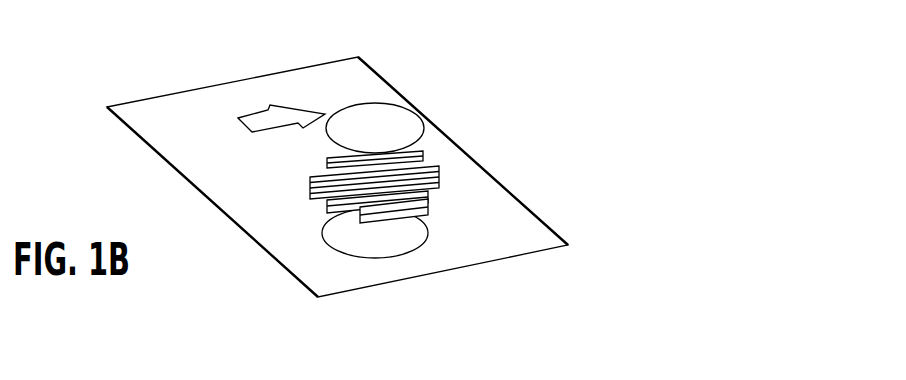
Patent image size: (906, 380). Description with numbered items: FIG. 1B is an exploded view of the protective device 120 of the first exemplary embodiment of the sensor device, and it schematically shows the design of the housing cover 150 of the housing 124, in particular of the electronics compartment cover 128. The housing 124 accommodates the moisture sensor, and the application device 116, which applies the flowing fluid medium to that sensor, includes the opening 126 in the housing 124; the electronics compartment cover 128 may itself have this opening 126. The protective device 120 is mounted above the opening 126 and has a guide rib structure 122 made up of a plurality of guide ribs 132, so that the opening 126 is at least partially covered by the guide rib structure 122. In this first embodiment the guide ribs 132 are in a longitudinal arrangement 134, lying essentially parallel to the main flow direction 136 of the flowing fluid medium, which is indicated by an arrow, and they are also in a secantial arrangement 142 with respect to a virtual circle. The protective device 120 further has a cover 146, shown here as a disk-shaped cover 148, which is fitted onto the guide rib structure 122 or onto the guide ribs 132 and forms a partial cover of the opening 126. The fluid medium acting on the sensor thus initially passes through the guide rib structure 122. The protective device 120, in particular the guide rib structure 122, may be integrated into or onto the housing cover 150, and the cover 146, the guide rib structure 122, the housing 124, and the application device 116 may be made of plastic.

The application device 116 is at (518, 145).
The protective device 120 is at (513, 140).
The guide rib structure 122 is at (513, 189).
The housing 124 is at (450, 248).
The opening 126 is at (357, 242).
The electronics compartment cover 128 is at (337, 173).
The guide rib 132 is at (513, 189).
The longitudinal arrangement 134 is at (513, 189).
The main flow direction 136 is at (300, 110).
The secantial arrangement 142 is at (443, 185).
The cover 146 is at (392, 90).
The disk-shaped cover 148 is at (379, 118).
The housing cover 150 is at (337, 173).